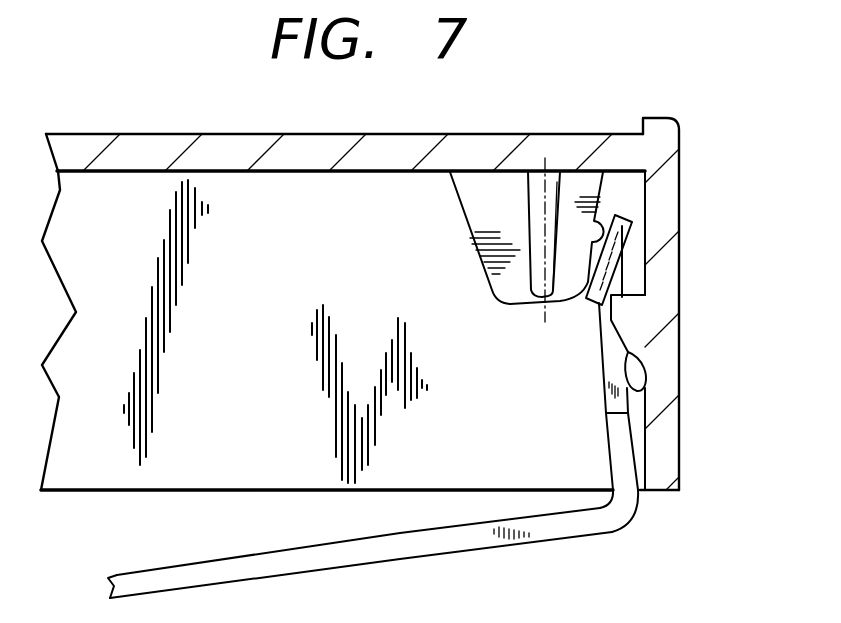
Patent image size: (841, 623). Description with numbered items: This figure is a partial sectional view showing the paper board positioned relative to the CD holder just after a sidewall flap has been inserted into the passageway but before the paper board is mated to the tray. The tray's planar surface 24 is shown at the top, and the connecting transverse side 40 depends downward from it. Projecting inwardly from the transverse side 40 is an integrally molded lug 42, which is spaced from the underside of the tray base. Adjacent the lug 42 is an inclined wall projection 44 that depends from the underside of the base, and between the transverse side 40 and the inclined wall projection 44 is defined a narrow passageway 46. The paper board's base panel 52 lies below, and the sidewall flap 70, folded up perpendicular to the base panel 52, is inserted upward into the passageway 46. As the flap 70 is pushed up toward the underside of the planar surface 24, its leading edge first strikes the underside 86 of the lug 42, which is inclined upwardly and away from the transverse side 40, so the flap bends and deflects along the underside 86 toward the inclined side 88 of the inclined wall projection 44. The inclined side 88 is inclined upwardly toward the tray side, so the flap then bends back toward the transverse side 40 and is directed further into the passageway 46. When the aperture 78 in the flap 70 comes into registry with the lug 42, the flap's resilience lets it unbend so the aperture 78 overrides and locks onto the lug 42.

The planar surface 24 is at (487, 148).
The connecting transverse side 40 is at (670, 215).
The lug 42 is at (628, 314).
The inclined wall projection 44 is at (578, 187).
The passageway 46 is at (586, 290).
The base panel 52 is at (556, 518).
The sidewall flap 70 is at (610, 438).
The aperture 78 is at (608, 366).
The lug underside 86 is at (640, 381).
The inclined side 88 is at (600, 222).